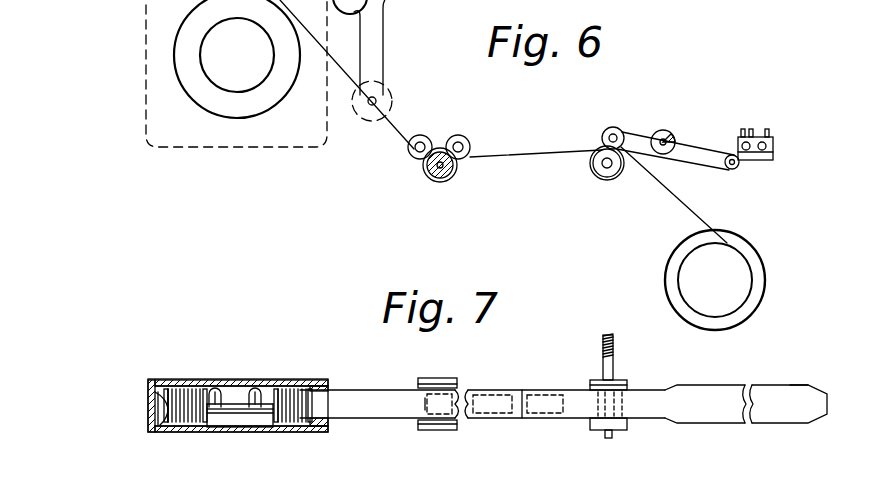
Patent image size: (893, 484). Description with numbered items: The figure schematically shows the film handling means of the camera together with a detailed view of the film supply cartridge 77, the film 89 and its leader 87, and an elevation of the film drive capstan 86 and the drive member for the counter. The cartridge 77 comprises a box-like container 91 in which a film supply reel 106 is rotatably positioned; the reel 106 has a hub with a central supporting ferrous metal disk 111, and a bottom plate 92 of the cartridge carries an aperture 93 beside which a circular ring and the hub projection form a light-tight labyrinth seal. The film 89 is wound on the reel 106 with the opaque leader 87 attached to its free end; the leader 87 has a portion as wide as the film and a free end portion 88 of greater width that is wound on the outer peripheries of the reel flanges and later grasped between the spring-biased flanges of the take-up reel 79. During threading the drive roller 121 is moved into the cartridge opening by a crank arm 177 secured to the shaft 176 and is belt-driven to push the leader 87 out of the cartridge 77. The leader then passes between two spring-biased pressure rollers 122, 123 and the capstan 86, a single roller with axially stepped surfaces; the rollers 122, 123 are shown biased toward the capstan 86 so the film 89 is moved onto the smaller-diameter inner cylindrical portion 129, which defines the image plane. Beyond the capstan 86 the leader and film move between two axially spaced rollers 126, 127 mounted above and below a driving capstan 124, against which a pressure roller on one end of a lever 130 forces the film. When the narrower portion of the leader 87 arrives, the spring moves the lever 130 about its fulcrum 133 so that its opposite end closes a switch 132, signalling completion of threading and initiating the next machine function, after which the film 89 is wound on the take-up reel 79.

In FIG. 6, the crank arm 177 is at (370, 27).
In FIG. 6, the shaft 176 is at (385, 92).
In FIG. 6, the pressure roller 123 is at (413, 134).
In FIG. 6, the pressure roller 122 is at (464, 136).
In FIG. 6, the capstan 86 is at (441, 183).
In FIG. 7, the capstan 86 is at (442, 378).
In FIG. 6, the film 89 is at (532, 156).
In FIG. 6, the drive roller 121 is at (618, 128).
In FIG. 6, the driving element 124 is at (603, 181).
In FIG. 7, the driving element 124 is at (594, 408).
In FIG. 6, the lever 130 is at (640, 133).
In FIG. 6, the fulcrum 133 is at (672, 133).
In FIG. 6, the switch 132 is at (762, 161).
In FIG. 6, the take-up reel 79 is at (666, 257).
In FIG. 7, the box-like container 91 is at (191, 373).
In FIG. 7, the film supply cartridge 77 is at (296, 375).
In FIG. 7, the aperture 93 is at (214, 430).
In FIG. 7, the ferrous metal disk 111 is at (252, 412).
In FIG. 7, the film supply reel 106 is at (163, 412).
In FIG. 7, the bottom plate 92 is at (172, 432).
In FIG. 7, the inner cylindrical portion 129 is at (425, 398).
In FIG. 7, the axially spaced roller 126 is at (590, 384).
In FIG. 7, the axially spaced roller 127 is at (621, 432).
In FIG. 7, the leader 87 is at (732, 364).
In FIG. 7, the free end portion 88 is at (786, 392).